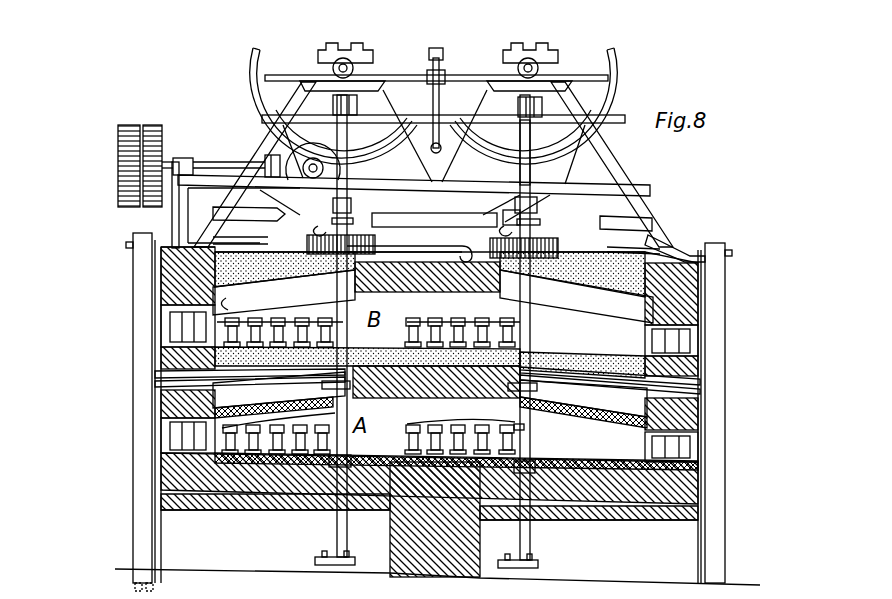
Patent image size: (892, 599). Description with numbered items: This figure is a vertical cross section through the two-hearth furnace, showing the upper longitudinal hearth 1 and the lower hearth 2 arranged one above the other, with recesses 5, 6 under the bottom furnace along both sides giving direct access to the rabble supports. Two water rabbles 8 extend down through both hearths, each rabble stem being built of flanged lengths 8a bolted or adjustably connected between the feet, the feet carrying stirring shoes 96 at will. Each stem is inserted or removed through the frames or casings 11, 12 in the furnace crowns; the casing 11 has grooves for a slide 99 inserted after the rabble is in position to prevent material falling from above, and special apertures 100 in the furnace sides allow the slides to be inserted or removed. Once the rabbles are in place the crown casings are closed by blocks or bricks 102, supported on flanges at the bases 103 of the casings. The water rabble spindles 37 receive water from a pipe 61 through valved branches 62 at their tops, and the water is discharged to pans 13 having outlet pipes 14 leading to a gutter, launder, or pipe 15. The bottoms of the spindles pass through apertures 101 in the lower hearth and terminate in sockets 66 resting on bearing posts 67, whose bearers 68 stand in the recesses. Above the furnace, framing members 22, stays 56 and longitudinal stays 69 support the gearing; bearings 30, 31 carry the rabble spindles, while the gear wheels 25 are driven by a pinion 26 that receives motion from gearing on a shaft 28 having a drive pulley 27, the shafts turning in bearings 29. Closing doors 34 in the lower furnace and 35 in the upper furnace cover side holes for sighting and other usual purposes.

The longitudinal hearth 1 is at (580, 458).
The longitudinal hearth 2 is at (601, 336).
The recess 5 is at (589, 544).
The recess 6 is at (275, 536).
The water rabble 8 is at (538, 236).
The flanged length 8a is at (528, 424).
The frame or casing 11 is at (610, 418).
The frame 12 is at (558, 300).
The pan 13 is at (268, 240).
The outlet pipe 14 is at (430, 250).
The gutter, launder, or pipe 15 is at (468, 253).
The stays, bolts, angle irons, and strengthening rails 22 is at (270, 130).
The gear wheel 25 is at (252, 99).
The pinion 26 is at (265, 212).
The drive pulley 27 is at (162, 104).
The shaft 28 is at (236, 158).
The bearing 29 is at (184, 157).
The bearing 30 is at (518, 112).
The bearing 31 is at (615, 213).
The closing door 34 is at (158, 434).
The closing door 35 is at (163, 327).
The water rabble spindle 37 is at (520, 170).
The stay 56 is at (133, 505).
The pipe 61 is at (440, 145).
The branch 62 is at (378, 88).
The socket 66 is at (350, 432).
The bearing post 67 is at (335, 531).
The bearer 68 is at (313, 560).
The longitudinal stay 69 is at (158, 258).
The stirring shoe 96 is at (407, 339).
The slide 99 is at (165, 376).
The special aperture 100 is at (165, 386).
The aperture 101 is at (345, 470).
The blocks or bricks 102 is at (284, 292).
The base 103 is at (611, 330).